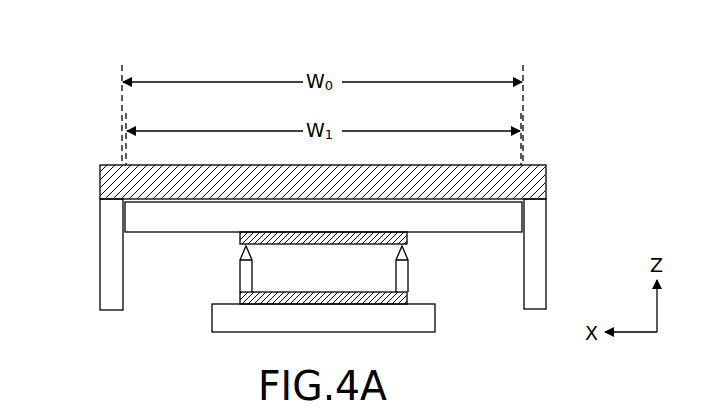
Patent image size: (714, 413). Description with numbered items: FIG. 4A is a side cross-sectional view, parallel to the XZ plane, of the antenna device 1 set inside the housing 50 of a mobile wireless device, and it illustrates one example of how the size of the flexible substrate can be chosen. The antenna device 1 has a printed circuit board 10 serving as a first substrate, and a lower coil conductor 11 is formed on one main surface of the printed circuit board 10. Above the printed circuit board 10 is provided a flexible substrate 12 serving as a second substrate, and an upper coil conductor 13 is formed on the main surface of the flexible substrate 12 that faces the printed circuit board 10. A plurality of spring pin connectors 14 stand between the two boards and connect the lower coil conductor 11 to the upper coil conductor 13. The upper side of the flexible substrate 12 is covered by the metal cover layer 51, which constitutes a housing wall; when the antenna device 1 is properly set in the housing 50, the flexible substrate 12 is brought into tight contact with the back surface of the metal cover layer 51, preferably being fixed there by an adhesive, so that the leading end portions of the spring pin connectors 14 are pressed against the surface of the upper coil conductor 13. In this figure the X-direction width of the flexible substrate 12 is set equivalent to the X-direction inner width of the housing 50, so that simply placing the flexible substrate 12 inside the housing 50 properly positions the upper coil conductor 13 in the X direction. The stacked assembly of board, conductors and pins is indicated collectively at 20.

The antenna device 1 is at (607, 65).
The printed circuit board 10 is at (433, 317).
The lower coil conductor 11 is at (407, 297).
The flexible substrate 12 is at (510, 220).
The upper coil conductor 13 is at (407, 238).
The spring pin connectors 14 is at (240, 270).
The bonded structure 20 is at (210, 284).
The housing 50 is at (96, 243).
The metal cover layer 51 is at (100, 182).